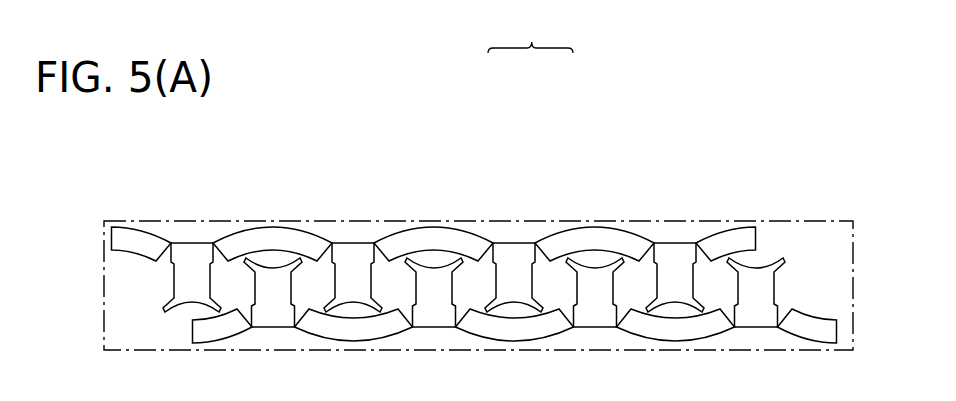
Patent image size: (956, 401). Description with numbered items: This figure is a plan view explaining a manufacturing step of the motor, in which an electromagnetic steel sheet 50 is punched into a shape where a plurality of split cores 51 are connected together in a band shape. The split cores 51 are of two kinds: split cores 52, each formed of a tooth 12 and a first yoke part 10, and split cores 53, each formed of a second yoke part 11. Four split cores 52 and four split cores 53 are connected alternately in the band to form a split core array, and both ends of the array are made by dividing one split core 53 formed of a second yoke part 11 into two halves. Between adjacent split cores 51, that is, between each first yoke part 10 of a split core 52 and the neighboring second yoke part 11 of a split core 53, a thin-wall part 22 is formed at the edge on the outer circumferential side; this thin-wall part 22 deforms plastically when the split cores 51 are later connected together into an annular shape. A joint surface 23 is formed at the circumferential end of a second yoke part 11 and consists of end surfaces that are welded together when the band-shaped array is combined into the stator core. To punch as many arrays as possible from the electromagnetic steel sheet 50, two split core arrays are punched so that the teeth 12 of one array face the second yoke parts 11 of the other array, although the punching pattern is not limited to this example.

The first yoke part 10 is at (188, 243).
The second yoke part 11 is at (254, 231).
The tooth 12 is at (356, 255).
The thin-wall part 22 is at (213, 241).
The joint surface 23 is at (123, 254).
The electromagnetic steel sheet 50 is at (805, 232).
The split cores 51 is at (530, 36).
The split core 52 is at (501, 120).
The split core 53 is at (558, 120).